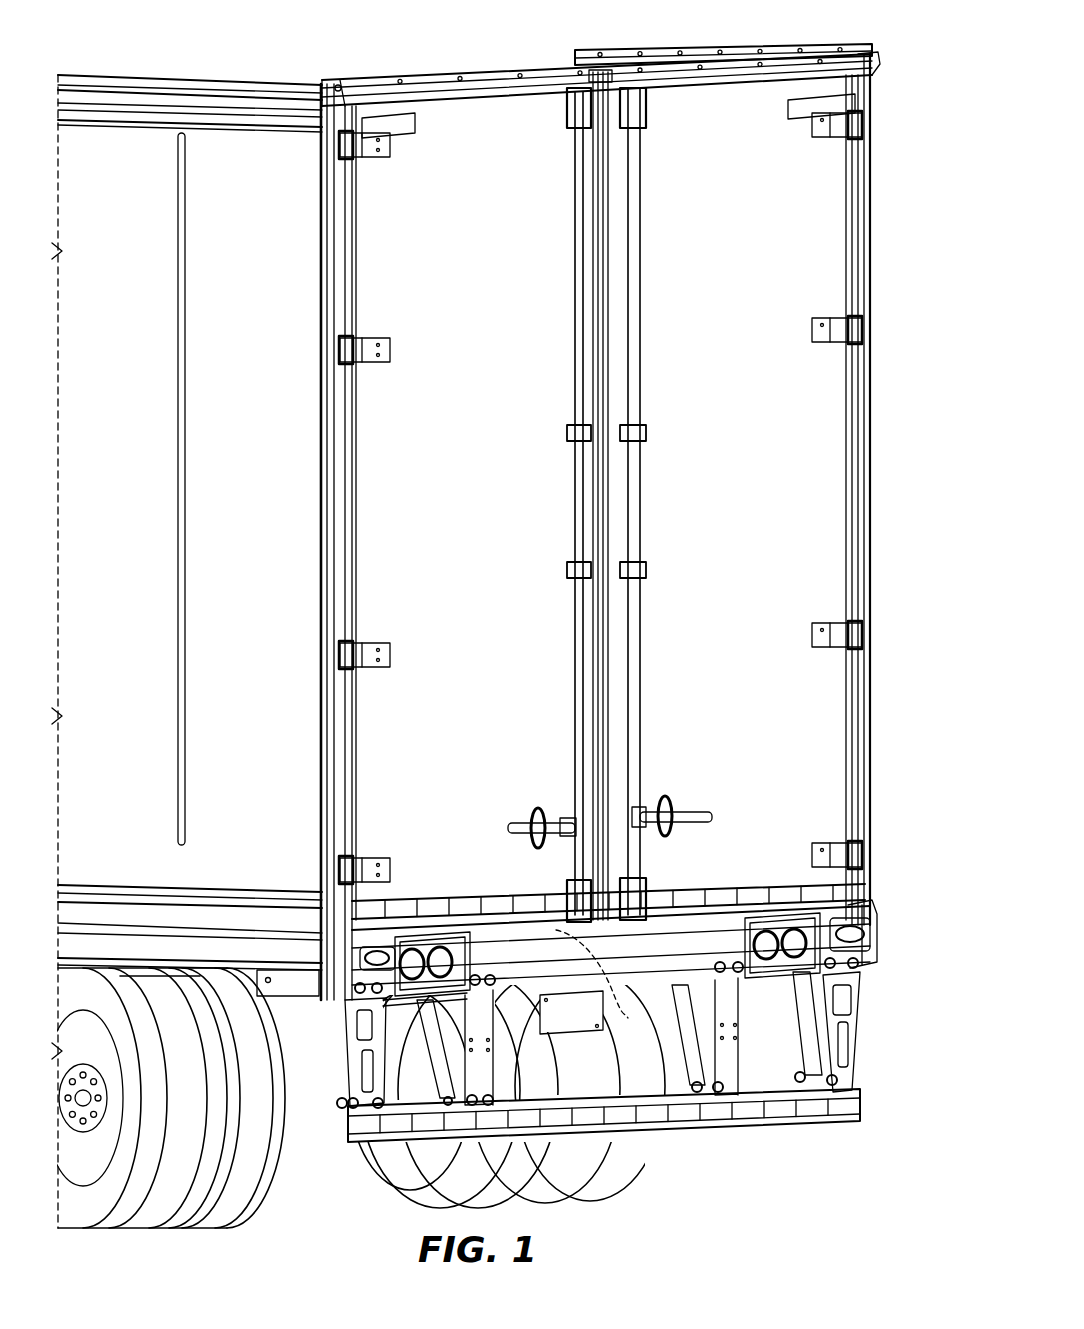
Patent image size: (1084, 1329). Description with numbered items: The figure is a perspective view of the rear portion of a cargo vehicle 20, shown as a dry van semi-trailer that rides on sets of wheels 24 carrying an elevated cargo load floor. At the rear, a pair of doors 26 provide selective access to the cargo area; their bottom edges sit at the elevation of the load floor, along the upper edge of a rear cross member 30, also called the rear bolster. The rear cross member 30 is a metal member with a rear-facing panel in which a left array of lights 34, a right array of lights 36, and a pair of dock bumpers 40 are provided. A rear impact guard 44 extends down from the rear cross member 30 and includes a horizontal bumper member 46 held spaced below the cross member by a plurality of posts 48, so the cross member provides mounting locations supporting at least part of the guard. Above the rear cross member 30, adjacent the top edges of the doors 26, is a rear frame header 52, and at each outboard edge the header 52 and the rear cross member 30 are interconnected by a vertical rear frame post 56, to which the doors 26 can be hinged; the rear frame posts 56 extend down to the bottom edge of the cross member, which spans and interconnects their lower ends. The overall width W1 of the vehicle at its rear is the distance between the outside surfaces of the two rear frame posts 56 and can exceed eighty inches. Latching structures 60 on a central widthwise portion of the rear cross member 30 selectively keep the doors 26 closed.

The cargo vehicle 20 is at (910, 90).
The wheels 24 is at (177, 1165).
The doors 26 is at (490, 520).
The rear cross member 30 is at (698, 930).
The left array of lights 34 is at (420, 933).
The right array of lights 36 is at (878, 970).
The dock bumpers 40 is at (867, 934).
The rear impact guard 44 is at (635, 1080).
The horizontal bumper member 46 is at (640, 1130).
The posts 48 is at (810, 1038).
The rear frame header 52 is at (455, 80).
The rear frame posts 56 is at (862, 372).
The latching structures 60 is at (612, 992).
The overall width W1 is at (345, 763).